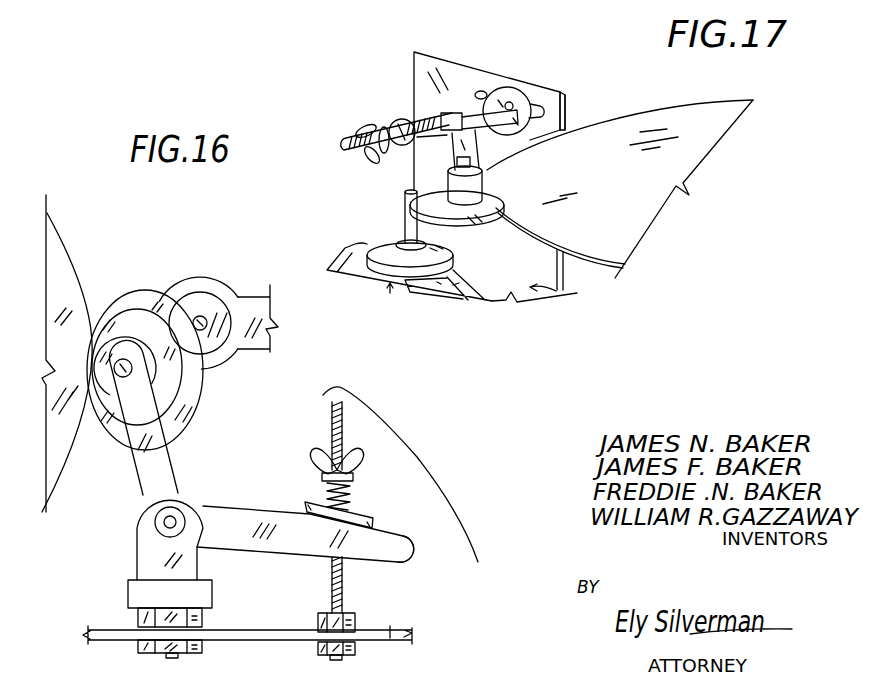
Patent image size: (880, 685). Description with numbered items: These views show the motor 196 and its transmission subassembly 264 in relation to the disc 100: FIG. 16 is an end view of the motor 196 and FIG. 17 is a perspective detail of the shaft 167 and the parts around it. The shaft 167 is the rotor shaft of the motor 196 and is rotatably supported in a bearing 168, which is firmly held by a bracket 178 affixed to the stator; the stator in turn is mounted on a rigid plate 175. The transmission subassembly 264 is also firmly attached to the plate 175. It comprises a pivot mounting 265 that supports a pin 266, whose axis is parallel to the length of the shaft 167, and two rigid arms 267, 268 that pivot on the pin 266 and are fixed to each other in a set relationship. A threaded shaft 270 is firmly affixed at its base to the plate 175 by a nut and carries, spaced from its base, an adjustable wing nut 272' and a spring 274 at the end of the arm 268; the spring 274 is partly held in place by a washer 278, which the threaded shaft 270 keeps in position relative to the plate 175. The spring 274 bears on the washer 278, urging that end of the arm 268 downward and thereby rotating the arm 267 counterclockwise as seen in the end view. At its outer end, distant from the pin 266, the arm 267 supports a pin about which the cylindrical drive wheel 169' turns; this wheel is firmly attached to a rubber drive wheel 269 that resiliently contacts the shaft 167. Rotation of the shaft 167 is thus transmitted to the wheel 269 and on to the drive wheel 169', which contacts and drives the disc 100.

In FIG. 16, the disc 100 is at (68, 281).
In FIG. 17, the disc 100 is at (752, 111).
In FIG. 16, the drive wheel 269 is at (126, 290).
In FIG. 17, the drive wheel 269 is at (457, 220).
In FIG. 16, the shaft 167 is at (196, 318).
In FIG. 17, the shaft 167 is at (404, 204).
In FIG. 16, the bearing 168 is at (219, 320).
In FIG. 17, the bearing 168 is at (363, 243).
In FIG. 16, the bracket 178 is at (257, 340).
In FIG. 17, the bracket 178 is at (475, 295).
In FIG. 16, the cylindrical drive wheel 169' is at (173, 368).
In FIG. 17, the cylindrical drive wheel 169' is at (422, 185).
In FIG. 16, the rigid arm 267 is at (166, 458).
In FIG. 17, the rigid arm 267 is at (477, 150).
In FIG. 16, the pin 266 is at (155, 519).
In FIG. 17, the pin 266 is at (462, 116).
In FIG. 16, the pivot mounting 265 is at (153, 556).
In FIG. 17, the pivot mounting 265 is at (511, 105).
In FIG. 16, the rigid arm 268 is at (277, 515).
In FIG. 17, the rigid arm 268 is at (490, 119).
In FIG. 16, the threaded shaft 270 is at (343, 438).
In FIG. 17, the threaded shaft 270 is at (350, 147).
In FIG. 16, the adjustable wing nut 272' is at (364, 479).
In FIG. 16, the spring 274 is at (348, 506).
In FIG. 16, the washer 278 is at (406, 536).
In FIG. 16, the rigid plate 175 is at (247, 623).
In FIG. 17, the rigid plate 175 is at (566, 94).
In FIG. 16, the transmission subassembly 264 is at (420, 461).
In FIG. 17, the transmission subassembly 264 is at (399, 110).
In FIG. 17, the motor 196 is at (552, 276).